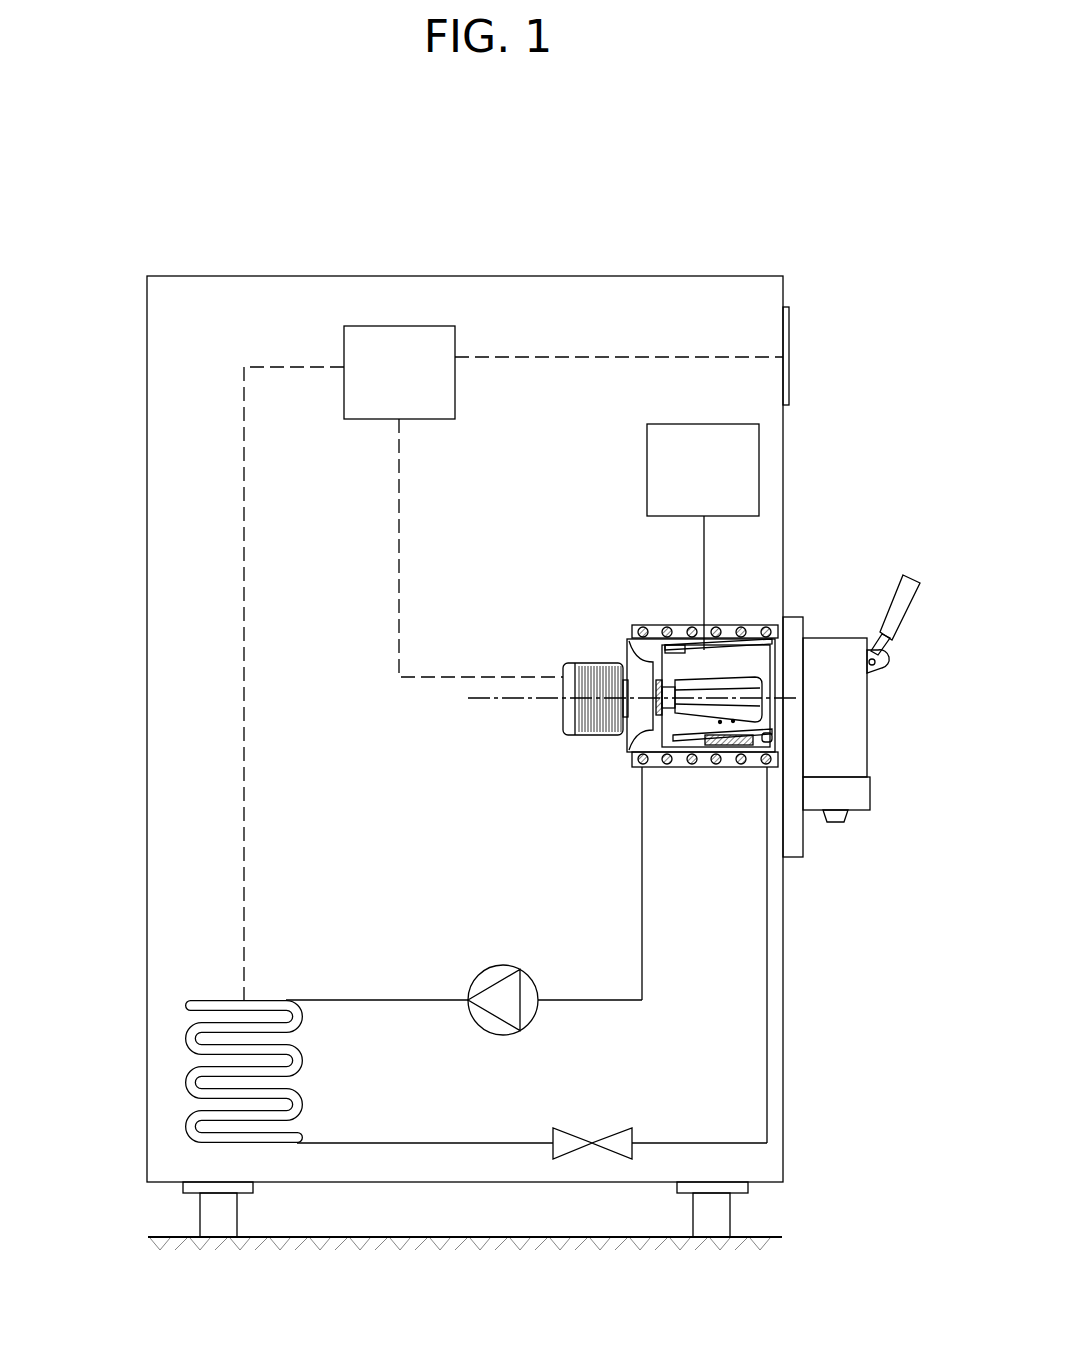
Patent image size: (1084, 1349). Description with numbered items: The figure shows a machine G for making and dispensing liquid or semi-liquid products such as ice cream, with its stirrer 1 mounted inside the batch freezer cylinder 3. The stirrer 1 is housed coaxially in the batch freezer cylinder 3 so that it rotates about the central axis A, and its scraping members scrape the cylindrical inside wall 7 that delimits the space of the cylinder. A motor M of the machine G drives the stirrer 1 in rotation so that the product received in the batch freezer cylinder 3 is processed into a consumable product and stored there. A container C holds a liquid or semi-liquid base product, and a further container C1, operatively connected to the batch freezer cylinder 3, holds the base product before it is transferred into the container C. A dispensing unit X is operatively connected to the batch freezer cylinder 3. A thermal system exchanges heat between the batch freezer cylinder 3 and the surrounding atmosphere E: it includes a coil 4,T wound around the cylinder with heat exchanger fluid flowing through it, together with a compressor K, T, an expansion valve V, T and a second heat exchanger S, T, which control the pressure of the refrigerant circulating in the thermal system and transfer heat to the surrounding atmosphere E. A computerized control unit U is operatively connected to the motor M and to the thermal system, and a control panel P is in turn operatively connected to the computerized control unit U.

The surrounding atmosphere E is at (211, 184).
The control panel P is at (793, 340).
The computerized control unit U is at (388, 387).
The further container C1 is at (719, 484).
The container C is at (752, 630).
The machine G is at (868, 578).
The stirrer 1 is at (693, 667).
The cylindrical inside wall 7 is at (773, 747).
The central axis A is at (485, 698).
The motor M is at (565, 737).
The batch freezer cylinder 3 is at (625, 748).
The coil of thermal system 4,T is at (740, 770).
The compressor of thermal system K, T is at (475, 968).
The second heat exchanger of thermal system S, T is at (183, 1068).
The expansion valve of thermal system V, T is at (640, 1136).
The dispensing unit X is at (877, 800).